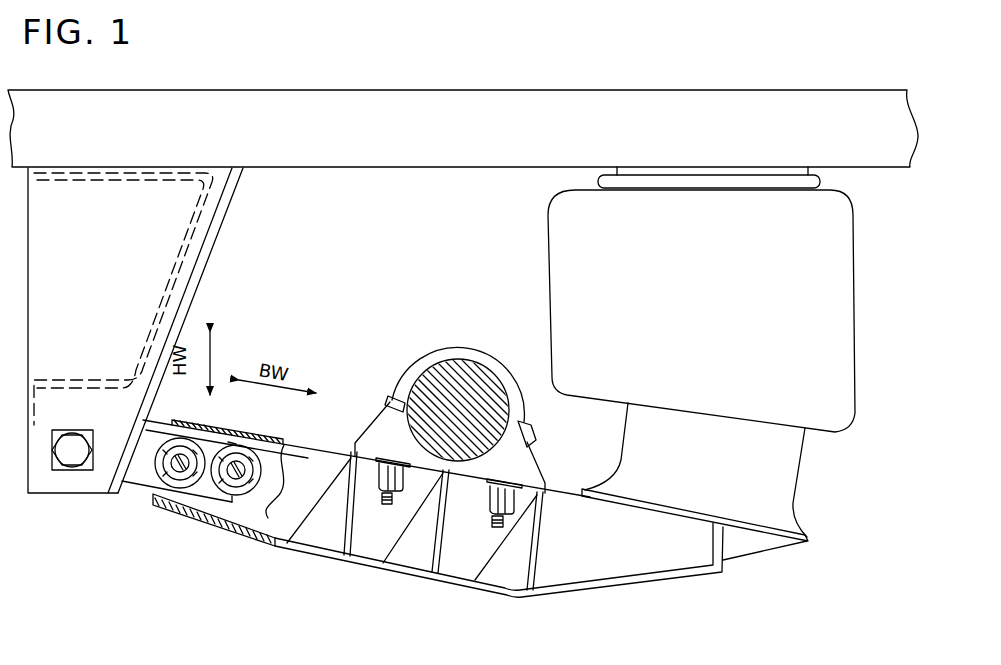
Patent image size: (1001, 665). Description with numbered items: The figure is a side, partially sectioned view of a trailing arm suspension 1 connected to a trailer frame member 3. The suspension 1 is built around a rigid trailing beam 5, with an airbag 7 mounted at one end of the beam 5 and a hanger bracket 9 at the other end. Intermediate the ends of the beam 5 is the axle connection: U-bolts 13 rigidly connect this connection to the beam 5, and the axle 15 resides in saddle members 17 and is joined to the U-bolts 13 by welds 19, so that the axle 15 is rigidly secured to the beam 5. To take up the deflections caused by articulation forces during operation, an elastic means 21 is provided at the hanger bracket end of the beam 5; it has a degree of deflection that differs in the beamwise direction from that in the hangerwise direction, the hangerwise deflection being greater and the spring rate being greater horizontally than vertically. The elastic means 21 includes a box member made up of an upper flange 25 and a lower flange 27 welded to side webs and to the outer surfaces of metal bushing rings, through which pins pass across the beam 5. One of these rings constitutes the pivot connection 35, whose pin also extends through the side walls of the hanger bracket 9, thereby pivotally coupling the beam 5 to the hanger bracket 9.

The trailing arm suspension 1 is at (233, 567).
The trailer frame member 3 is at (467, 100).
The rigid trailing beam 5 is at (557, 573).
The airbag 7 is at (719, 300).
The hanger bracket 9 is at (117, 272).
The U-bolts 13 is at (424, 358).
The axle 15 is at (458, 375).
The saddle members 17 is at (518, 477).
The welds 19 is at (392, 397).
The elastic means 21 is at (147, 470).
The upper flange 25 is at (228, 442).
The lower flange 27 is at (183, 505).
The pivot connection 35 is at (77, 448).